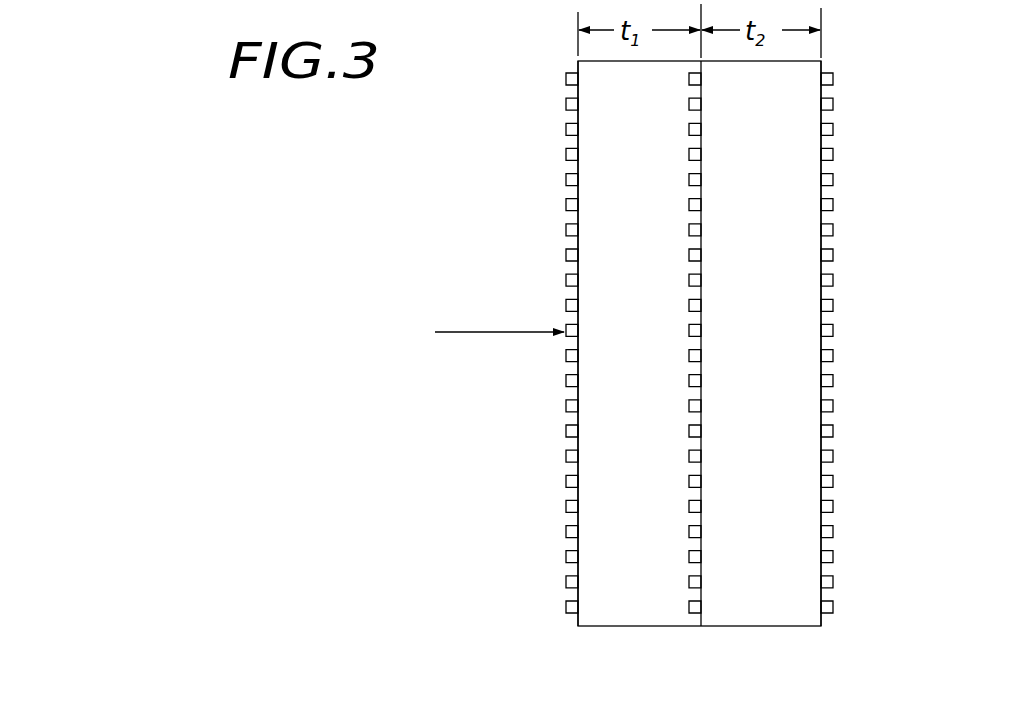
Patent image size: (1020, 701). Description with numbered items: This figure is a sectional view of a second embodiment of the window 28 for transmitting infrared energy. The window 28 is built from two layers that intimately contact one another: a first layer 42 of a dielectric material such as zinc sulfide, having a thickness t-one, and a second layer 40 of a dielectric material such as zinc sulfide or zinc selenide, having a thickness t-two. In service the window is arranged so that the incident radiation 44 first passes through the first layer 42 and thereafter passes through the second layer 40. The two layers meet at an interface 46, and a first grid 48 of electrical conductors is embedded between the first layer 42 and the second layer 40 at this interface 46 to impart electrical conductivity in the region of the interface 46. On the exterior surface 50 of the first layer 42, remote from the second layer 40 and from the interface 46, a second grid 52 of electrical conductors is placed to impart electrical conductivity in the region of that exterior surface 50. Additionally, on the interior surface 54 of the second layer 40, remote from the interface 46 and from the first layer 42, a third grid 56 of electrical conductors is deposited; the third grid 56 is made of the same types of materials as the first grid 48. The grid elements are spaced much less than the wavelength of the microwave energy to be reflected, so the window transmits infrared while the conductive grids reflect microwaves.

The window 28 is at (572, 60).
The second layer 40 is at (790, 611).
The first layer 42 is at (613, 612).
The incident radiation 44 is at (503, 331).
The interface 46 is at (702, 627).
The first grid 48 is at (688, 556).
The exterior surface 50 is at (577, 594).
The second grid 52 is at (565, 557).
The interior surface 54 is at (826, 471).
The third grid 56 is at (834, 502).